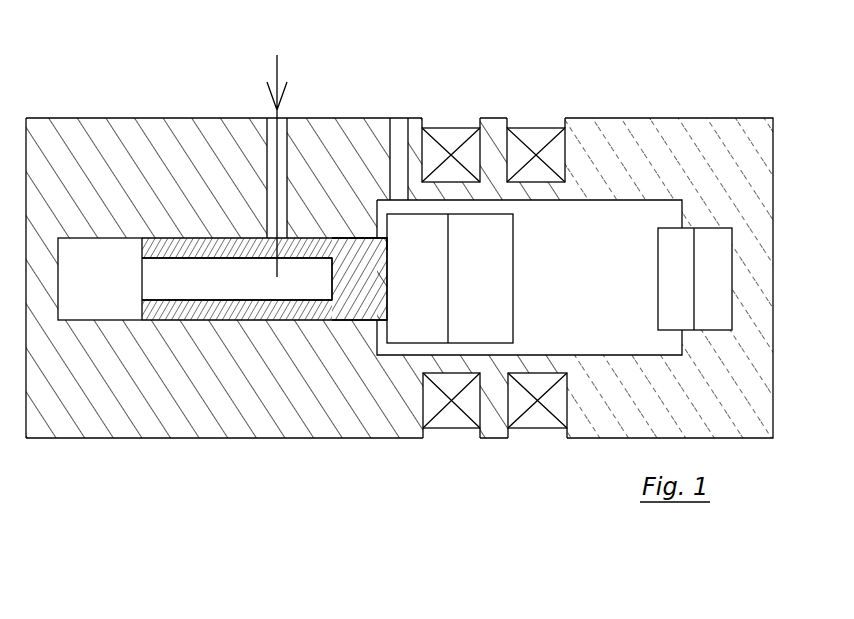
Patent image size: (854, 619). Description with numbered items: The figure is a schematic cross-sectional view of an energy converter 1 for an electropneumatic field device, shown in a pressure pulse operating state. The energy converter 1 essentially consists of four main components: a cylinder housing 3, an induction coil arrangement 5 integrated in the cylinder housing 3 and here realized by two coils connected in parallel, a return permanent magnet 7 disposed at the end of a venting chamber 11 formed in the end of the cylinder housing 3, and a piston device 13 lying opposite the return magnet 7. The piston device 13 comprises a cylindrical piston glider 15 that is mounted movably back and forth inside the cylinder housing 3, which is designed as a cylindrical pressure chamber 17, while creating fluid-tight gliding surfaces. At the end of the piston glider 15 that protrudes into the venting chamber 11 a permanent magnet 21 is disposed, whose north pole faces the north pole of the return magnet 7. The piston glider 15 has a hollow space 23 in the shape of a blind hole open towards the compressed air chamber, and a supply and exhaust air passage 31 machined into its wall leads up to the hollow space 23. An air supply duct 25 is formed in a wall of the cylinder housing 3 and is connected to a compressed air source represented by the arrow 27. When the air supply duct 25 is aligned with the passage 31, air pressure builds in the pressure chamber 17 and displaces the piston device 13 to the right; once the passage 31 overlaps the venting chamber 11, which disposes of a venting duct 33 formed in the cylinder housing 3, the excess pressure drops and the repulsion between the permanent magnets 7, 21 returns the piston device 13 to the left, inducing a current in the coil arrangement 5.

The energy converter 1 is at (673, 114).
The cylinder housing 3 is at (207, 418).
The induction coil arrangement 5 is at (472, 461).
The return permanent magnet 7 is at (712, 318).
The venting chamber 11 is at (588, 293).
The piston device 13 is at (342, 336).
The piston glider 15 is at (350, 243).
The pressure chamber 17 is at (107, 250).
The permanent magnet 21 is at (463, 223).
The hollow space 23 is at (212, 273).
The air supply duct 25 is at (288, 160).
The compressed air source 27 is at (283, 88).
The supply and exhaust air passage 31 is at (308, 238).
The venting duct 33 is at (410, 158).